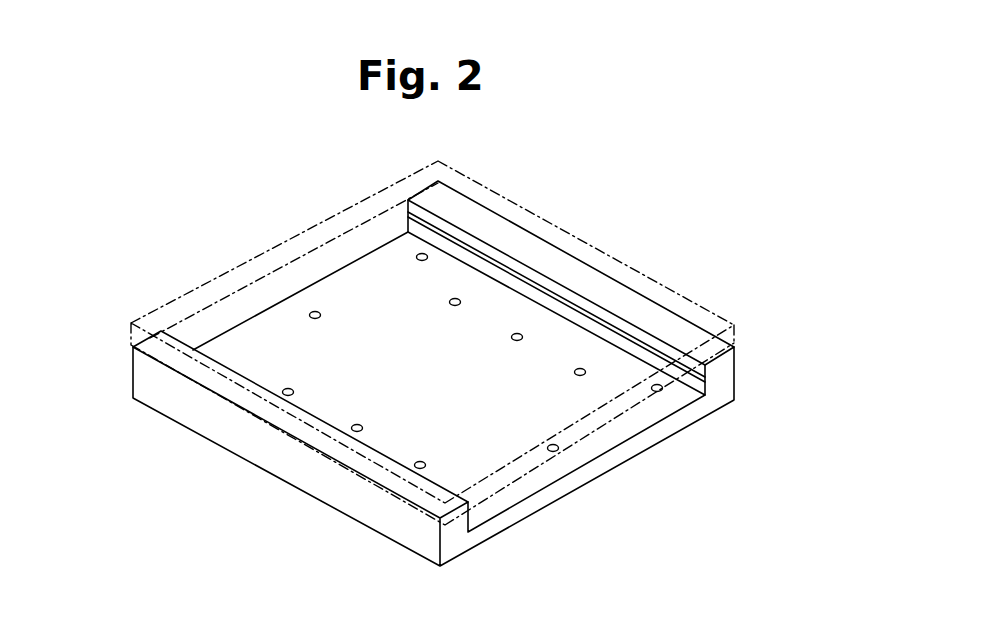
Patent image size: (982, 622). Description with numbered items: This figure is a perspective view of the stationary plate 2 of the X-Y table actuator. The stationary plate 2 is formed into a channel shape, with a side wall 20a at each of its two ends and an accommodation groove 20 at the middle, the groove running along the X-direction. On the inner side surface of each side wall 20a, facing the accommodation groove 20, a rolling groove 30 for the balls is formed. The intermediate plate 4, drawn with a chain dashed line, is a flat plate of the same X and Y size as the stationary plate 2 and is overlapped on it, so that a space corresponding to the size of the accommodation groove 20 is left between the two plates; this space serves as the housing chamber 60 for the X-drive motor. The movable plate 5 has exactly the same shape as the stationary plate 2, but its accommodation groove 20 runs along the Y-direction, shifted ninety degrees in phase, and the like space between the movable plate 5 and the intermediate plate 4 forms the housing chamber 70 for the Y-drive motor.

The stationary plate 2 is at (447, 373).
The movable plate 5 is at (447, 373).
The intermediate plate 4 is at (652, 278).
The accommodation groove 20 is at (347, 277).
The side wall 20a is at (673, 328).
The rolling groove 30 is at (488, 257).
The housing chamber 60 is at (473, 361).
The housing chamber 70 is at (470, 376).